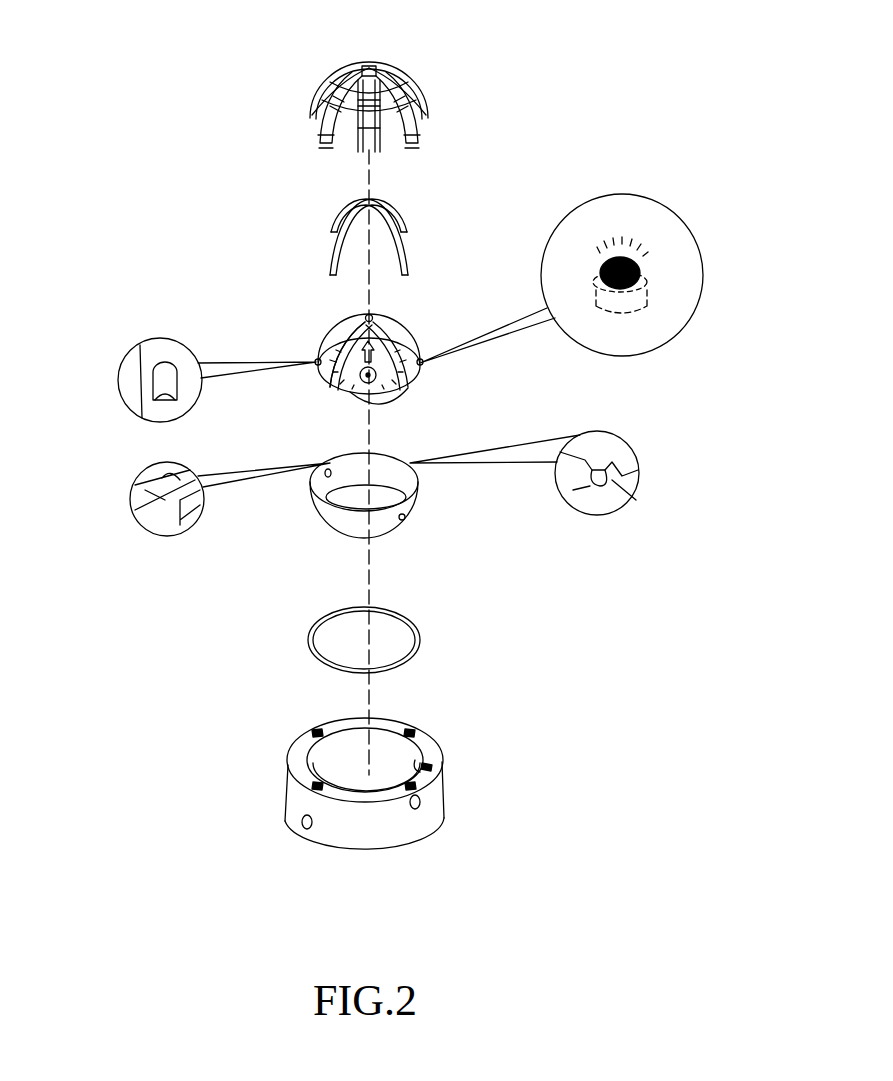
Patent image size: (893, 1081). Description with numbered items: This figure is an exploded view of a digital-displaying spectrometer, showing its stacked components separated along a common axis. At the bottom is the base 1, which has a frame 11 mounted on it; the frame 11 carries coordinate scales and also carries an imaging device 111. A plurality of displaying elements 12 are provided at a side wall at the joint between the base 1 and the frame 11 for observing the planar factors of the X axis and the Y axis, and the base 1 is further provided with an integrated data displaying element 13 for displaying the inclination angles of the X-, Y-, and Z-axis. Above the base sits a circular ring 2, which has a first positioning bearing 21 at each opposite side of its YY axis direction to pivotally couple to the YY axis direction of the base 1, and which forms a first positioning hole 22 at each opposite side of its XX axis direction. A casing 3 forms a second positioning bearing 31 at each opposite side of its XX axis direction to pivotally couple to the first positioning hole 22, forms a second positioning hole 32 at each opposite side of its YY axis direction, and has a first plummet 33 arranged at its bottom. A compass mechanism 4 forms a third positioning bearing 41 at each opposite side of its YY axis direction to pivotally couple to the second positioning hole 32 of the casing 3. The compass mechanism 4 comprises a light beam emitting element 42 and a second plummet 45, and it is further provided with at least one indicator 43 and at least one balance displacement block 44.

The base 1 is at (379, 783).
The displaying elements 12 is at (420, 785).
The integrated data displaying element 13 is at (428, 768).
The circular ring 2 is at (413, 617).
The first positioning bearing 21 is at (403, 662).
The first positioning hole 22 is at (407, 618).
The casing 3 is at (418, 480).
The second positioning bearing 31 is at (145, 478).
The second positioning hole 32 is at (602, 468).
The first plummet 33 is at (330, 508).
The compass mechanism 4 is at (418, 362).
The third positioning bearing 41 is at (328, 342).
The light beam emitting element 42 is at (640, 272).
The indicator 43 is at (368, 342).
The balance displacement block 44 is at (160, 380).
The second plummet 45 is at (400, 397).
The frame 11 is at (393, 72).
The imaging device 111 is at (360, 68).